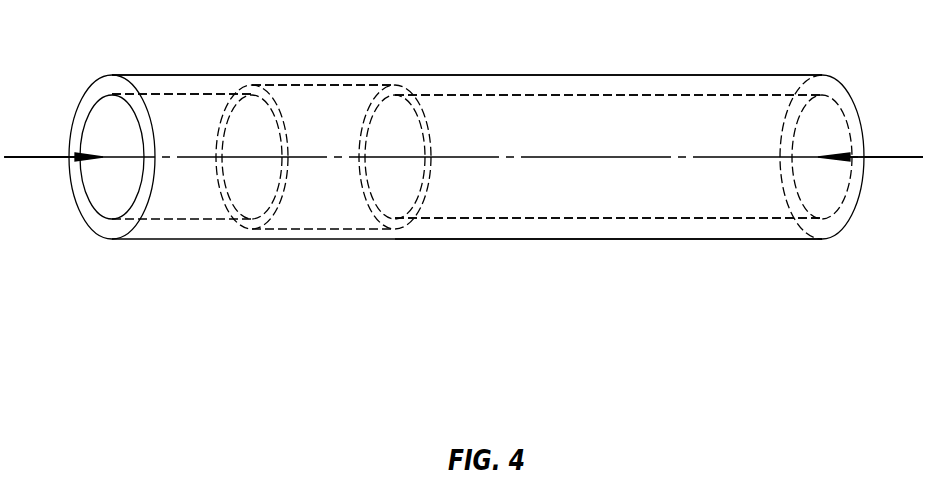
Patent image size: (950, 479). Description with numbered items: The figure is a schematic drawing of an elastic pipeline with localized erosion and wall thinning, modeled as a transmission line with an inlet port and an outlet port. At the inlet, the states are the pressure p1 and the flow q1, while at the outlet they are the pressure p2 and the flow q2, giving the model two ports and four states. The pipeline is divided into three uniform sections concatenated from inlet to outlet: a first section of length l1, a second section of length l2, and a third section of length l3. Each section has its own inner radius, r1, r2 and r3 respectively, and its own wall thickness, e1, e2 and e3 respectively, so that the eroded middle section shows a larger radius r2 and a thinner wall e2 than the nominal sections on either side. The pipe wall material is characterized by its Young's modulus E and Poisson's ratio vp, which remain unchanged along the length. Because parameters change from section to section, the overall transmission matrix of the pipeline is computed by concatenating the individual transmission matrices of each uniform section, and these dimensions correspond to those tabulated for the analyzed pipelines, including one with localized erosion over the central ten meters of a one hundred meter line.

The wall thickness of first section e1 is at (159, 138).
The wall thickness of second section e2 is at (297, 127).
The wall thickness of third section e3 is at (488, 135).
The radius of first section r1 is at (208, 157).
The radius of second section r2 is at (348, 157).
The radius of third section r3 is at (623, 157).
The length of first section l1 is at (110, 245).
The length of second section l2 is at (395, 240).
The length of third section l3 is at (822, 292).
The inlet pressure p1 is at (53, 133).
The inlet flow q1 is at (40, 181).
The outlet pressure p2 is at (870, 133).
The outlet flow q2 is at (886, 181).
The Young's modulus E is at (584, 212).
The Poisson's ratio vp is at (608, 203).